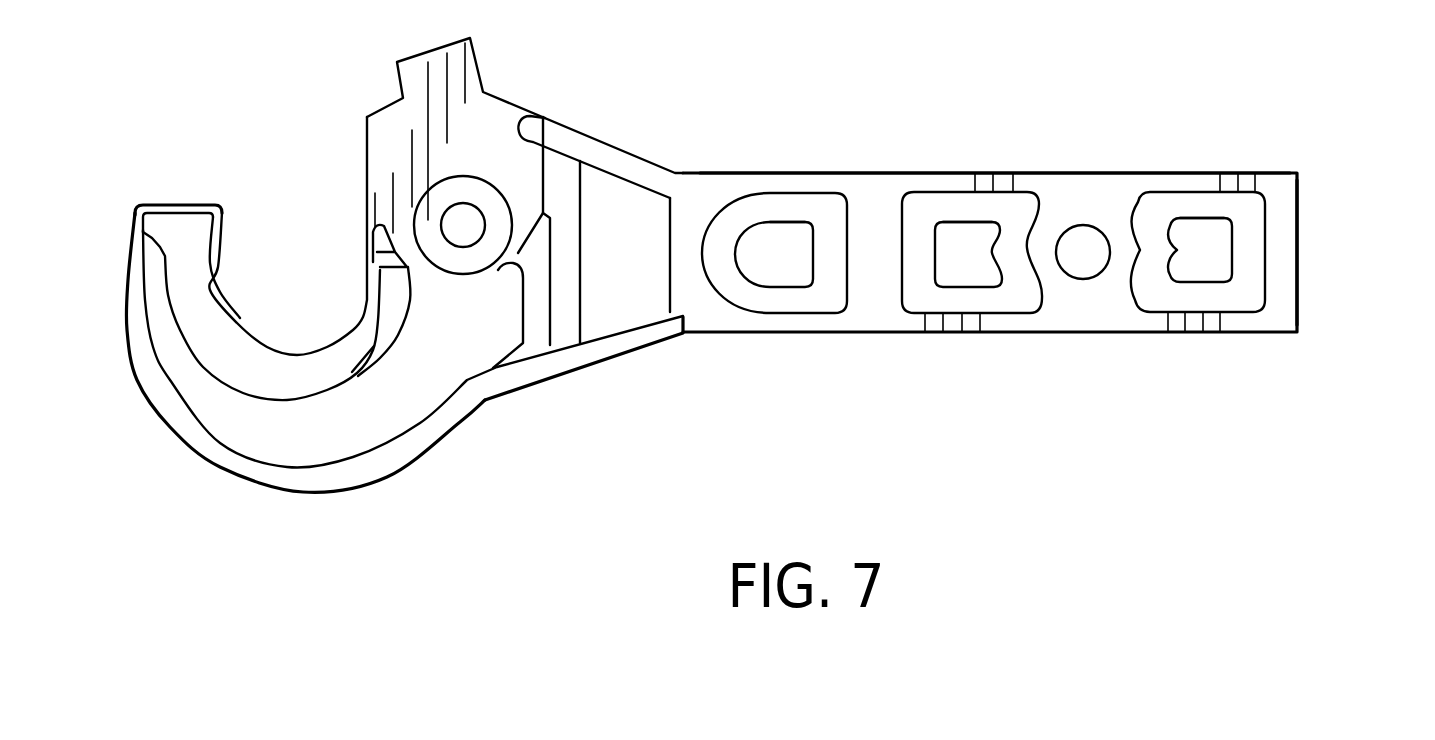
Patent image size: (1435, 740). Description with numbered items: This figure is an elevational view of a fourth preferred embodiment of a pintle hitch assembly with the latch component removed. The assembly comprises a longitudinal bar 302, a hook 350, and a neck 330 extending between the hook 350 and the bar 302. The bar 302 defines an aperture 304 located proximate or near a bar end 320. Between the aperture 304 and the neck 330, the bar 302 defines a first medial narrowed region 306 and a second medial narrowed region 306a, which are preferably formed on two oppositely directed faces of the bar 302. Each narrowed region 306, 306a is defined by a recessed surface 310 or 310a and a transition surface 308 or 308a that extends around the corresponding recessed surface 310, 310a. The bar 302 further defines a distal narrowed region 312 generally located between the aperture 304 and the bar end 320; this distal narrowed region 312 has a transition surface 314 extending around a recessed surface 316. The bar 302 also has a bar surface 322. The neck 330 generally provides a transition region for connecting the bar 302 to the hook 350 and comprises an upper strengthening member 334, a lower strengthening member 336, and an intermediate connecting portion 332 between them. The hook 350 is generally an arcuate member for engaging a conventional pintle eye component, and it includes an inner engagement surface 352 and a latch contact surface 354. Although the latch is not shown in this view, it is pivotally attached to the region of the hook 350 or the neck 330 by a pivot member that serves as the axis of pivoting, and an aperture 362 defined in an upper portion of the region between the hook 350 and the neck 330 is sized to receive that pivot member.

The longitudinal bar 302 is at (877, 182).
The aperture 304 is at (1068, 250).
The first medial narrowed region 306 is at (757, 267).
The second medial narrowed region 306a is at (948, 267).
The transition surface 308 is at (817, 305).
The transition surface 308a is at (1010, 303).
The recessed surface 310 is at (775, 230).
The recessed surface 310a is at (968, 228).
The distal narrowed region 312 is at (1190, 263).
The transition surface 314 is at (1245, 197).
The recessed surface 316 is at (1182, 227).
The bar end 320 is at (1298, 247).
The bar surface 322 is at (712, 183).
The neck 330 is at (600, 192).
The intermediate connecting portion 332 is at (622, 295).
The upper strengthening member 334 is at (633, 163).
The lower strengthening member 336 is at (683, 320).
The hook 350 is at (318, 450).
The inner engagement surface 352 is at (257, 337).
The latch contact surface 354 is at (170, 203).
The aperture 362 is at (463, 220).